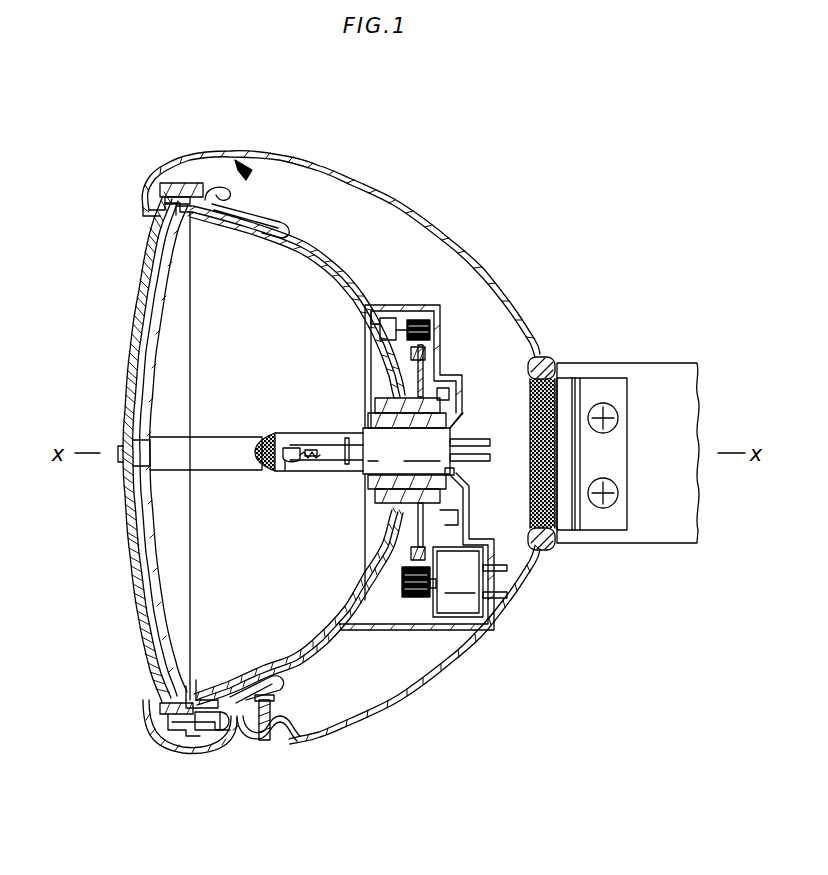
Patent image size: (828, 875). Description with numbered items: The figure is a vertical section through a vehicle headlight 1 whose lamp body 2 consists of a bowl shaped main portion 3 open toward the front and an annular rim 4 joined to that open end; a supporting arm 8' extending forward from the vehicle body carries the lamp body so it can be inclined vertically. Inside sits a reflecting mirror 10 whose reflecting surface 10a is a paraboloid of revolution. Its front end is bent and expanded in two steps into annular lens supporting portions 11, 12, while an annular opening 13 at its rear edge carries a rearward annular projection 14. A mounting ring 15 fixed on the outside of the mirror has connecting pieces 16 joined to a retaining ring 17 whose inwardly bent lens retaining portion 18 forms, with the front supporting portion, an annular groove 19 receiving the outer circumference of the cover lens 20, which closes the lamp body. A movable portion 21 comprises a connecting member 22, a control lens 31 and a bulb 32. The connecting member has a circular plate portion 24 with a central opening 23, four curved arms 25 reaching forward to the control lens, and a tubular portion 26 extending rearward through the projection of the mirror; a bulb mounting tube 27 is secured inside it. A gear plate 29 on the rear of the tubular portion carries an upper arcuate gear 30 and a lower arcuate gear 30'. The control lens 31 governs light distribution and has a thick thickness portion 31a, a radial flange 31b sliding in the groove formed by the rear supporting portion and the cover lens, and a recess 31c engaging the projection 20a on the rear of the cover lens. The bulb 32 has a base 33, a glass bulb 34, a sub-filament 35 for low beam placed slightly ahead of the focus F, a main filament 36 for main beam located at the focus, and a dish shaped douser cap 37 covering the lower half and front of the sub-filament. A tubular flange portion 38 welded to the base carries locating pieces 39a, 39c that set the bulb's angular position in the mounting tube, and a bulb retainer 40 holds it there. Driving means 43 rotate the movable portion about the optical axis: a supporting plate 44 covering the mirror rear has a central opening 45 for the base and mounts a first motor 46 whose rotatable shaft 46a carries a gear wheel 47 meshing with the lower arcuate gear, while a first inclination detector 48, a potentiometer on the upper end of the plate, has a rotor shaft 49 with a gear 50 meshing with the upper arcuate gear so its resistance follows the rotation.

The headlight 1 is at (563, 169).
The lamp body 2 is at (230, 82).
The main portion 3 is at (280, 157).
The rim 4 is at (222, 158).
The supporting arm 8' is at (613, 430).
The reflecting mirror 10 is at (292, 243).
The reflecting surface 10a is at (306, 256).
The lens supporting portion 11 is at (170, 730).
The lens supporting portion 12 is at (198, 730).
The annular opening 13 is at (380, 400).
The annular projection 14 is at (403, 382).
The mounting ring 15 is at (255, 200).
The connecting piece 16 is at (244, 745).
The retaining ring 17 is at (190, 736).
The lens retaining portion 18 is at (140, 713).
The annular groove 19 is at (158, 707).
The cover lens 20 is at (130, 350).
The projection 20a is at (130, 460).
The movable portion 21 is at (372, 303).
The connecting member 22 is at (348, 281).
The opening 23 is at (378, 492).
The circular plate portion 24 is at (370, 540).
The curved arm 25 is at (268, 230).
The tubular portion 26 is at (380, 508).
The bulb mounting tube 27 is at (462, 503).
The gear plate 29 is at (424, 372).
The arcuate gear 30 is at (453, 333).
The arcuate gear 30' is at (466, 582).
The control lens 31 is at (165, 324).
The thick thickness portion 31a is at (183, 687).
The radial flange 31b is at (188, 700).
The recess 31c is at (150, 438).
The bulb 32 is at (307, 435).
The base 33 is at (450, 433).
The glass bulb 34 is at (270, 433).
The sub-filament 35 is at (284, 446).
The main filament 36 is at (311, 450).
The douser cap 37 is at (284, 468).
The focus F is at (308, 466).
The flange portion 38 is at (406, 451).
The locating piece 39a is at (441, 378).
The locating piece 39c is at (454, 517).
The bulb retainer 40 is at (450, 392).
The driving means 43 is at (506, 612).
The supporting plate 44 is at (447, 307).
The central opening 45 is at (454, 473).
The first motor 46 is at (468, 620).
The rotatable shaft 46a is at (434, 590).
The gear wheel 47 is at (413, 598).
The first inclination detector 48 is at (388, 316).
The rotor shaft 49 is at (395, 328).
The gear 50 is at (425, 320).